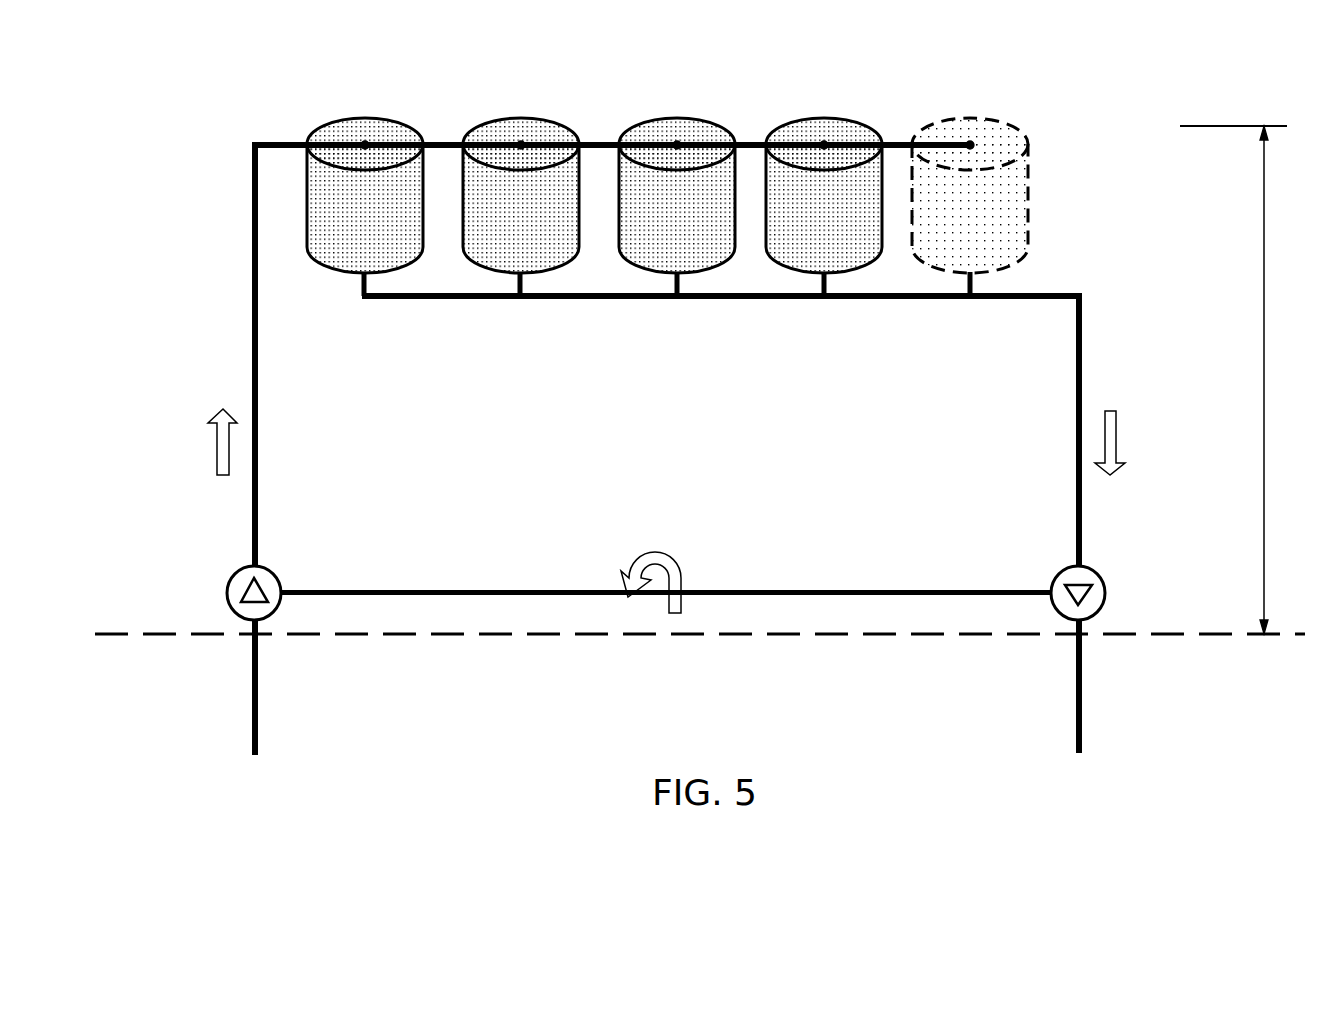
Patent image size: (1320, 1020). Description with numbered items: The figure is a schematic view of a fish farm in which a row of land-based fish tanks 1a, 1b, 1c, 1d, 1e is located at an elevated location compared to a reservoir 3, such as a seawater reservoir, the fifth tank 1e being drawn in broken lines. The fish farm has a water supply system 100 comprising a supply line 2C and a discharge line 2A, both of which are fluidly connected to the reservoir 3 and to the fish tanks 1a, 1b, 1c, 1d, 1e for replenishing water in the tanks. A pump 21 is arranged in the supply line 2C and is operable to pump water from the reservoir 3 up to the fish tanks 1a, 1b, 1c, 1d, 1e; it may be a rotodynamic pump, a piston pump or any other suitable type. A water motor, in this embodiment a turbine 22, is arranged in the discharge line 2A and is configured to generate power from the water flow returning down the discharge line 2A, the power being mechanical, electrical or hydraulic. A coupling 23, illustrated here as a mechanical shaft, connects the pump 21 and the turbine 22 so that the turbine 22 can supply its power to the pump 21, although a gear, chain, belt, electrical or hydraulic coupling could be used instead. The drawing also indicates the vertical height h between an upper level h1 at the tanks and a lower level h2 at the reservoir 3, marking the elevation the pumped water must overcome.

The land-based fish tank 1a is at (342, 120).
The land-based fish tank 1b is at (492, 118).
The land-based fish tank 1c is at (634, 121).
The land-based fish tank 1d is at (794, 118).
The land-based fish tank 1e is at (940, 120).
The discharge line 2A is at (1082, 385).
The supply line 2C is at (250, 370).
The reservoir 3 is at (687, 701).
The pump 21 is at (265, 567).
The turbine 22 is at (1052, 578).
The coupling 23 is at (855, 590).
The water supply system 100 is at (1093, 218).
The height h is at (1275, 380).
The upper level h1 is at (1245, 125).
The lower level h2 is at (1213, 637).